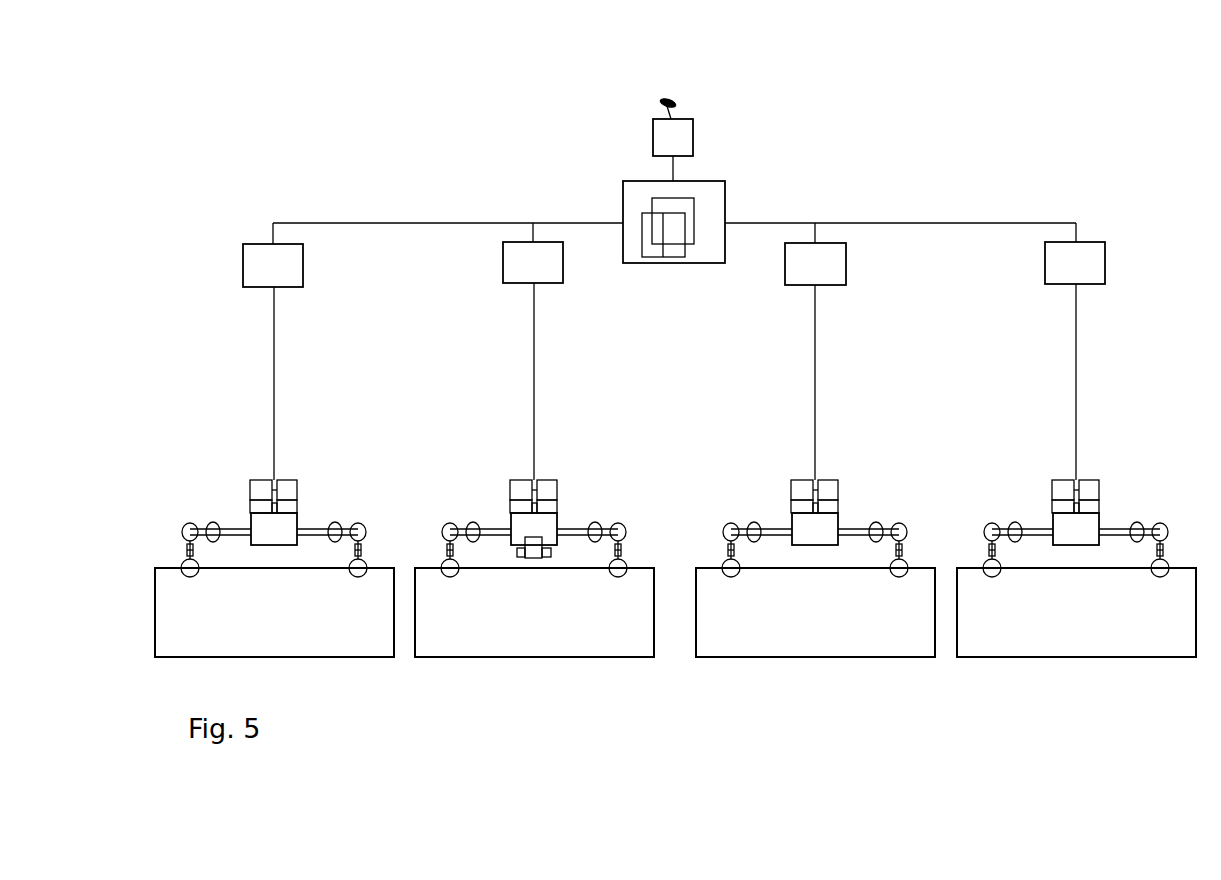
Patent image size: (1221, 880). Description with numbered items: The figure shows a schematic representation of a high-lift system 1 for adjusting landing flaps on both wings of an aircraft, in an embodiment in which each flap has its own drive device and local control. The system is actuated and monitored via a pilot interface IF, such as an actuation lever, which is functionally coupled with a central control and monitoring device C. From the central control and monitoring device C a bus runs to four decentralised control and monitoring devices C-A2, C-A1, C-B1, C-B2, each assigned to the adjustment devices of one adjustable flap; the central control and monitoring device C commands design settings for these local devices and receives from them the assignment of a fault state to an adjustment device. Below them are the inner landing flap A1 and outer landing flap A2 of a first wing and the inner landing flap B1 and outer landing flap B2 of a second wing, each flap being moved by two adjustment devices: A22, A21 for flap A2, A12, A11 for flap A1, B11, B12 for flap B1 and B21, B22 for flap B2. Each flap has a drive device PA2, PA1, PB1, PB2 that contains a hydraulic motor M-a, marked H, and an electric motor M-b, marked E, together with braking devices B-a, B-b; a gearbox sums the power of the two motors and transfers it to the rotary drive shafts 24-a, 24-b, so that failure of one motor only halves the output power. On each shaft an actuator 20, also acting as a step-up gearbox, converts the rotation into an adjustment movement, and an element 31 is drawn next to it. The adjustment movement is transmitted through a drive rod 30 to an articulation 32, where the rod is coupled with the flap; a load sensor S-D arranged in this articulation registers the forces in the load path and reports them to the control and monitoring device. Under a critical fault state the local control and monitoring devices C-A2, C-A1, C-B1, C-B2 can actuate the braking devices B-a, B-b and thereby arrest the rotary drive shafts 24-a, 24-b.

The high-lift system 1 is at (1050, 198).
The pilot interface IF is at (690, 131).
The central control and monitoring device C is at (717, 198).
The local control and monitoring device C-A2 is at (273, 351).
The local control and monitoring device C-A1 is at (533, 351).
The local control and monitoring device C-B1 is at (815, 351).
The local control and monitoring device C-B2 is at (1075, 351).
The adjustment device A22 is at (190, 400).
The adjustment device A21 is at (342, 400).
The adjustment device A12 is at (423, 400).
The adjustment device A11 is at (576, 400).
The adjustment device B11 is at (741, 400).
The adjustment device B12 is at (903, 400).
The adjustment device B21 is at (984, 400).
The adjustment device B22 is at (1147, 400).
The outer landing flap A2 is at (252, 625).
The inner landing flap A1 is at (512, 625).
The inner landing flap B1 is at (793, 625).
The outer landing flap B2 is at (1054, 625).
The drive device PA2 is at (290, 538).
The drive device PA1 is at (550, 538).
The drive device PB1 is at (831, 538).
The drive device PB2 is at (1092, 538).
The rotary drive shaft 24-b is at (595, 484).
The rotary drive shaft 24-a is at (735, 488).
The electric motor M-b is at (652, 457).
The hydraulic motor M-a is at (699, 457).
The braking device B-b is at (649, 477).
The braking device B-a is at (700, 477).
The actuator 20 is at (649, 503).
The wheel bearing 31 is at (662, 515).
The load sensor S-D is at (653, 548).
The drive rod 30 is at (656, 545).
The articulation 32 is at (668, 589).